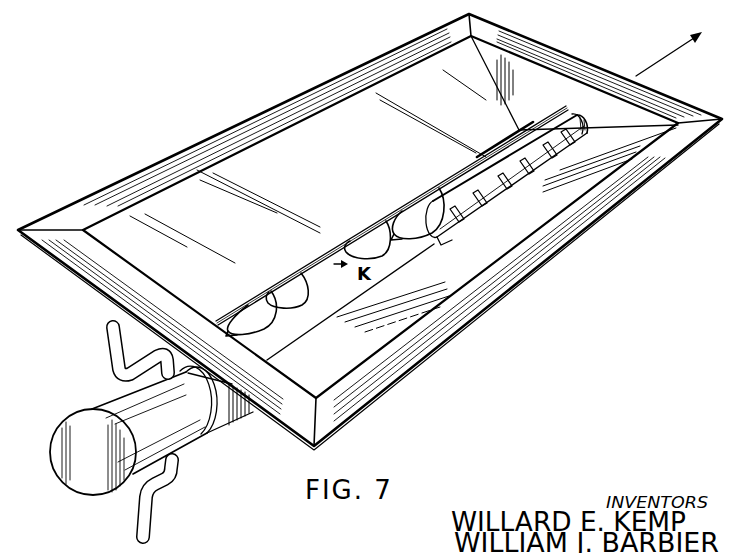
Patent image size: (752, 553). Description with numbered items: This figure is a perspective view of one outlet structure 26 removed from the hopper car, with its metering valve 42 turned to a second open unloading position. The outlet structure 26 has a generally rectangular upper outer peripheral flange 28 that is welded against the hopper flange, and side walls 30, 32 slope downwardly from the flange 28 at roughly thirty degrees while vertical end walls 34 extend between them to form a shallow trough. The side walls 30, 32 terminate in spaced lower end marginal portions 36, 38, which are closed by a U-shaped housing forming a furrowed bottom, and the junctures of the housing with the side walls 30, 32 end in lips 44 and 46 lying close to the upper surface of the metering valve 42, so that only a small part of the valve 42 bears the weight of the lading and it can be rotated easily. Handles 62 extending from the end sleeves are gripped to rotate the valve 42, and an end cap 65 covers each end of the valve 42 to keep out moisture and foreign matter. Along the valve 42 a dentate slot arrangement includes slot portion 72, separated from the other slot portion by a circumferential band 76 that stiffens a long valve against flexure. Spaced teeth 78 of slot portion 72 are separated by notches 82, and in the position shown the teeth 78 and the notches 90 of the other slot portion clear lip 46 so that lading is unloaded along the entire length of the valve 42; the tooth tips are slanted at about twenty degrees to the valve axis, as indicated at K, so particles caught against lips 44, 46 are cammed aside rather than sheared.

The outlet structure 26 is at (250, 106).
The upper outer peripheral flange 28 is at (362, 68).
The side wall 30 is at (332, 169).
The side wall 32 is at (543, 223).
The end wall 34 is at (558, 101).
The lower end marginal portion 36 is at (426, 184).
The lower end marginal portion 38 is at (408, 268).
The metering valve 42 is at (501, 190).
The lip 44 is at (499, 150).
The lip 46 is at (294, 327).
The handle 62 is at (110, 358).
The end cap 65 is at (93, 482).
The slot portion 72 is at (339, 305).
The circumferential band 76 is at (452, 239).
The teeth 78 is at (252, 317).
The notches 82 is at (303, 276).
The notches 90 is at (452, 213).